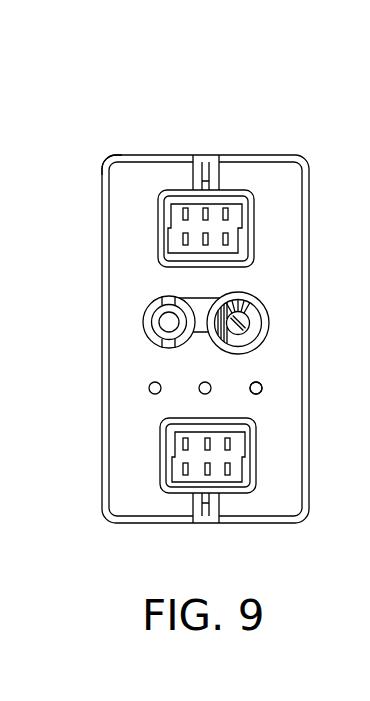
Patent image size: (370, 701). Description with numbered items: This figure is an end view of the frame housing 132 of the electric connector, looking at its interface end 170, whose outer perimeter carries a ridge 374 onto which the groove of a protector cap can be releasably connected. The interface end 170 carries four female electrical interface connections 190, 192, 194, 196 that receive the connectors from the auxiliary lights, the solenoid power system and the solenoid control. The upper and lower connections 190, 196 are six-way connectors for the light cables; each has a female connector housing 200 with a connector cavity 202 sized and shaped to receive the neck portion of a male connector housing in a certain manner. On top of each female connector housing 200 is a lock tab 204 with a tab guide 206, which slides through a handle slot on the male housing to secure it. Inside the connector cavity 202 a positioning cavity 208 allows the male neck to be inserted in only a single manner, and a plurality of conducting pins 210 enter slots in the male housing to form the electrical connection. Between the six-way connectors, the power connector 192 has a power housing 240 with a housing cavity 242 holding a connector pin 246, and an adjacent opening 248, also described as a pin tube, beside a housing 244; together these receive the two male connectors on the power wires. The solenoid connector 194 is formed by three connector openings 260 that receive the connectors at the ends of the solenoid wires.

The frame housing 132 is at (102, 238).
The ridge 374 is at (101, 171).
The interface end 170 is at (130, 172).
The electrical interface connection 190 is at (244, 187).
The electrical interface connector 192 is at (264, 294).
The electrical interface connector 194 is at (267, 383).
The electrical interface connection 196 is at (259, 442).
The female connector housing 200 is at (180, 190).
The connector cavity 202 is at (171, 218).
The lock tab 204 is at (216, 183).
The tab guide 206 is at (205, 183).
The positioning cavity 208 is at (224, 225).
The conducting pins 210 is at (185, 242).
The power housing 240 is at (269, 324).
The housing cavity 242 is at (255, 312).
The housing 244 is at (152, 315).
The connector pin 246 is at (236, 319).
The opening 248 is at (165, 323).
The connector openings 260 is at (199, 391).